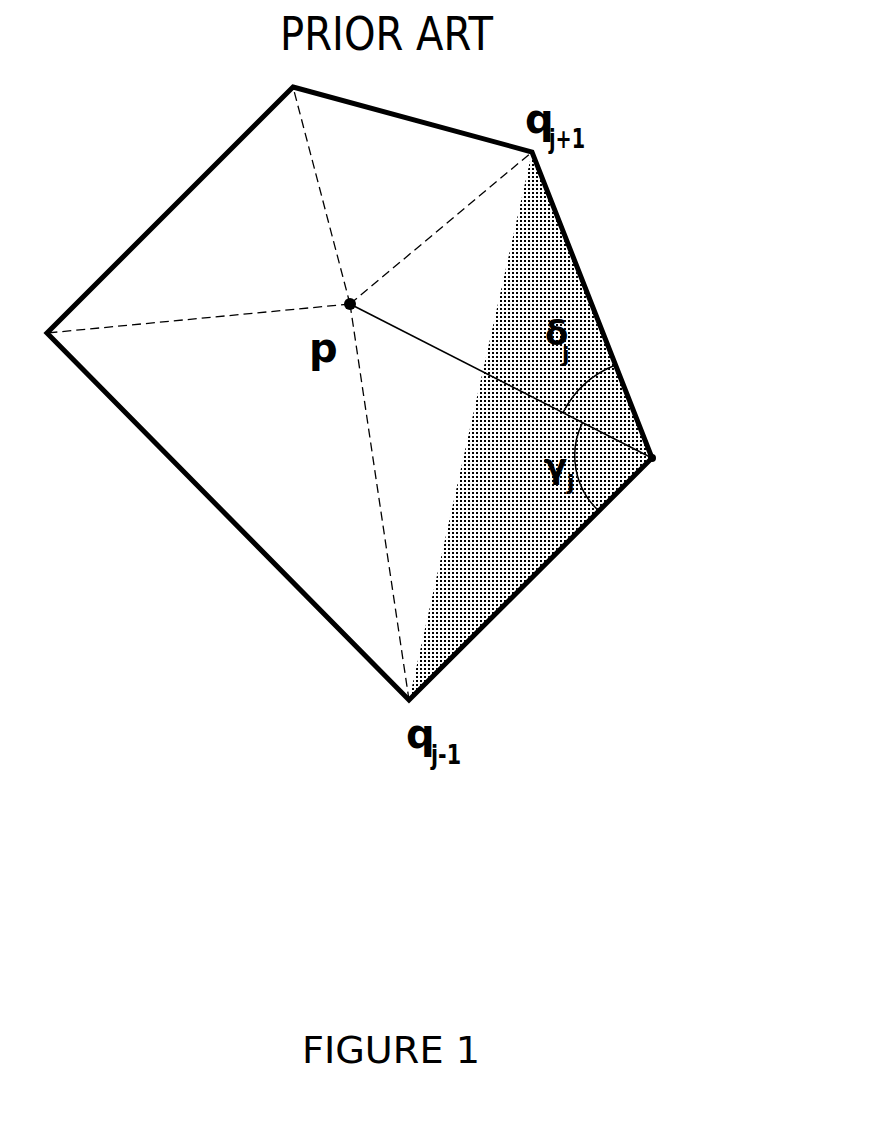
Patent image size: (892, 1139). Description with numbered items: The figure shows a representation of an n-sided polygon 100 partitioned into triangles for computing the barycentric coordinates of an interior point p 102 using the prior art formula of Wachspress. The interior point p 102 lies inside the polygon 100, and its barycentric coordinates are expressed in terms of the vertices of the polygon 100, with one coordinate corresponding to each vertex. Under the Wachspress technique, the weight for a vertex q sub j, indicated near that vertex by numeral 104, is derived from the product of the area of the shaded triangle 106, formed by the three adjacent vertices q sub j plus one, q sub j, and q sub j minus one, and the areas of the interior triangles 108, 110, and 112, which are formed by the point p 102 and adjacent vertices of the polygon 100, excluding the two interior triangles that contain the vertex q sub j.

The n-sided polygon 100 is at (230, 62).
The interior point p 102 is at (347, 300).
The vertex q_j 104 is at (652, 455).
The triangle 106 is at (536, 445).
The interior triangle 108 is at (407, 190).
The interior triangle 110 is at (248, 250).
The interior triangle 112 is at (293, 466).